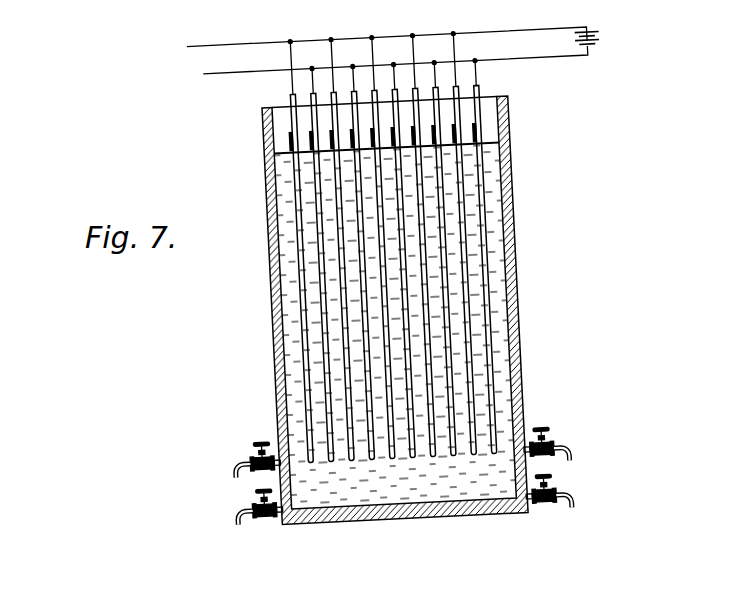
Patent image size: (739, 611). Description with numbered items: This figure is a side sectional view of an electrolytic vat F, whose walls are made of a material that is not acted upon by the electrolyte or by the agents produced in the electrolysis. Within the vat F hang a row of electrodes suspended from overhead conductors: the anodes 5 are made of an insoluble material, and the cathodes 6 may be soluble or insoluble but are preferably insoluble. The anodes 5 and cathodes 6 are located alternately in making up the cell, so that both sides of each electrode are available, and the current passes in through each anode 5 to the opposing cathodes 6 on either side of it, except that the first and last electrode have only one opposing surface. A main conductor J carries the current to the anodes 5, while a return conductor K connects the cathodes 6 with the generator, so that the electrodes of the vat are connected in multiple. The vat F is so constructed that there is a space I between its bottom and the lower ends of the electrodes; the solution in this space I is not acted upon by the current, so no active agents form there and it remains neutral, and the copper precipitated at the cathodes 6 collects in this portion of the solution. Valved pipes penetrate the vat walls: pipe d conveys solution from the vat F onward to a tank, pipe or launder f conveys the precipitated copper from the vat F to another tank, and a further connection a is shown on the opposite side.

The electrolytic vat F is at (524, 214).
The space I is at (395, 325).
The return conductor K is at (531, 29).
The main conductor J is at (543, 59).
The anodes 5 is at (307, 365).
The cathodes 6 is at (300, 293).
The pipe d is at (246, 471).
The outlet valve a is at (562, 448).
The pipe or launder f is at (243, 519).